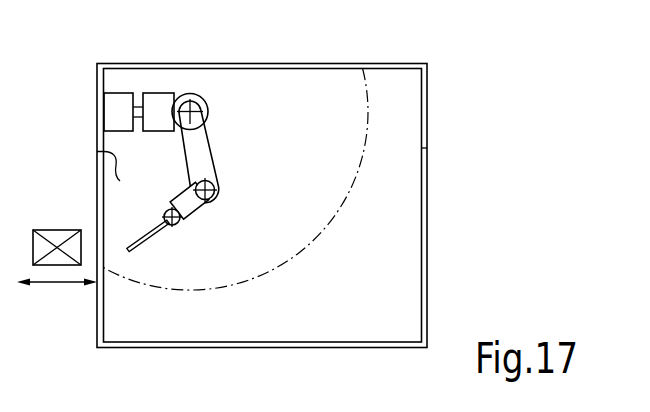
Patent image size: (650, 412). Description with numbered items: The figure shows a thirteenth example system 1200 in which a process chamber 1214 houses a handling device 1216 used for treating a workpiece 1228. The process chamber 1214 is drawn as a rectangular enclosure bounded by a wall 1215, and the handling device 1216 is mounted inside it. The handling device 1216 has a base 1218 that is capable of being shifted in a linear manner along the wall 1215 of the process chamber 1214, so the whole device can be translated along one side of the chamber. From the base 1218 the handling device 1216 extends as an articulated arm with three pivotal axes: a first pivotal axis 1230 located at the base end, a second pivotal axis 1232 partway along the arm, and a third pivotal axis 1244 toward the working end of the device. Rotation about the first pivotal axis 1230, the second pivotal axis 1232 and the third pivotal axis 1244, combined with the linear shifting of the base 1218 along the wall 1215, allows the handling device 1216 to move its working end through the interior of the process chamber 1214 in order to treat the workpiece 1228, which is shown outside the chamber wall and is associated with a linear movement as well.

The system 1200 is at (468, 125).
The process chamber 1214 is at (97, 79).
The wall 1215 is at (131, 181).
The handling device 1216 is at (232, 160).
The base 1218 is at (157, 103).
The workpiece 1228 is at (54, 230).
The first pivotal axis 1230 is at (208, 119).
The second pivotal axis 1232 is at (226, 193).
The third pivotal axis 1244 is at (114, 259).